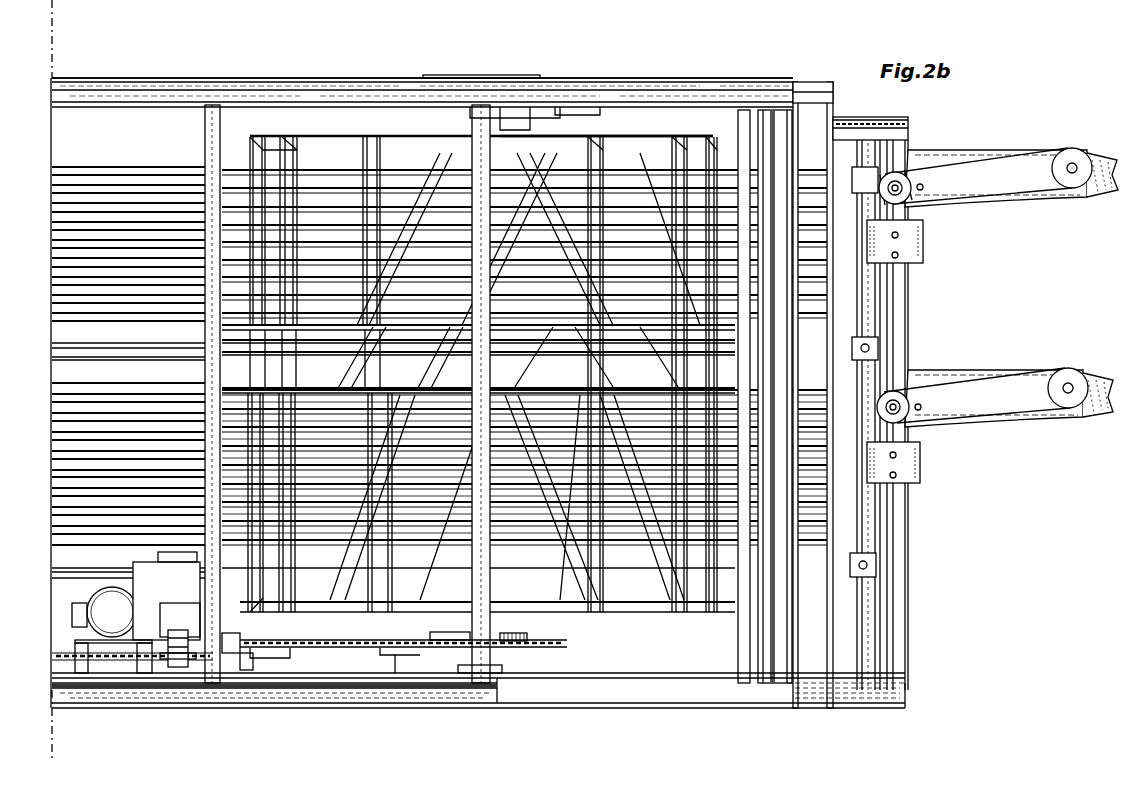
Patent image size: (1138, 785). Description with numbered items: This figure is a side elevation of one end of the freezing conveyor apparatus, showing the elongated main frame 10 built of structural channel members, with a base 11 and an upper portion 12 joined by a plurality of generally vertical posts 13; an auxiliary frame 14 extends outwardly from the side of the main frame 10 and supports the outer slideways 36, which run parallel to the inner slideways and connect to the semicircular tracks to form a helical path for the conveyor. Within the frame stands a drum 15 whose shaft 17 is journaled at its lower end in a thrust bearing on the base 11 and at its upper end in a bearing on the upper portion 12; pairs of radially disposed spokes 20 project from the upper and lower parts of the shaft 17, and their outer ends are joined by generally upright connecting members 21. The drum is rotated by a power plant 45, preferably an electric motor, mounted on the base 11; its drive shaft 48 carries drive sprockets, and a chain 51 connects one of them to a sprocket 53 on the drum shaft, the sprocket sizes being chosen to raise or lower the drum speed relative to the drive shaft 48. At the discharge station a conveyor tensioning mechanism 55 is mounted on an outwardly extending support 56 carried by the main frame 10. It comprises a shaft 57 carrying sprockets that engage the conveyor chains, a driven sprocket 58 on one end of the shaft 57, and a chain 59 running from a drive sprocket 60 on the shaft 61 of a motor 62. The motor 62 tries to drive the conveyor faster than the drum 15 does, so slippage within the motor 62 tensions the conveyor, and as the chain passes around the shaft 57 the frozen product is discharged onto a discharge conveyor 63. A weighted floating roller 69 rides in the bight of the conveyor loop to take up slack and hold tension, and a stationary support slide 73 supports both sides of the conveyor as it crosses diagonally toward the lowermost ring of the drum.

The main frame 10 is at (643, 74).
The base 11 is at (598, 697).
The upper portion 12 is at (284, 90).
The vertical posts 13 is at (210, 682).
The auxiliary frame 14 is at (143, 695).
The drum 15 is at (561, 139).
The shaft 17 is at (505, 618).
The radially disposed spokes 20 is at (388, 143).
The upright connecting members 21 is at (652, 130).
The outer slideways 36 is at (58, 515).
The power plant 45 is at (102, 600).
The drive shaft 48 is at (183, 667).
The chain 51 is at (285, 640).
The sprocket 53 is at (555, 648).
The conveyor tensioning mechanism 55 is at (988, 146).
The outwardly extending support 56 is at (990, 205).
The shaft 57 is at (1072, 163).
The driven sprocket 58 is at (1072, 183).
The chain 59 is at (1000, 160).
The drive sprocket 60 is at (890, 192).
The shaft 61 is at (900, 180).
The motor 62 is at (905, 200).
The discharge conveyor 63 is at (1093, 160).
The floating roller 69 is at (875, 340).
The stationary support slide 73 is at (112, 350).